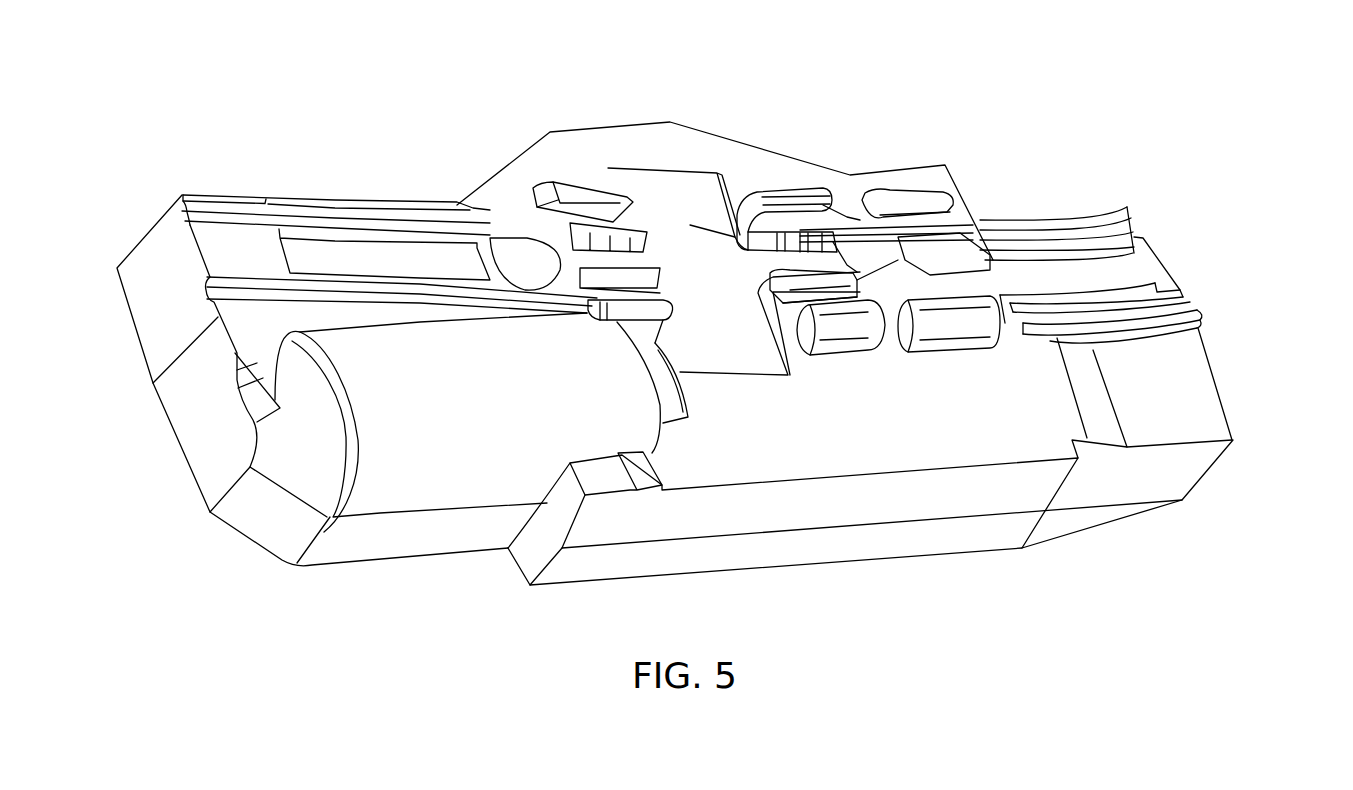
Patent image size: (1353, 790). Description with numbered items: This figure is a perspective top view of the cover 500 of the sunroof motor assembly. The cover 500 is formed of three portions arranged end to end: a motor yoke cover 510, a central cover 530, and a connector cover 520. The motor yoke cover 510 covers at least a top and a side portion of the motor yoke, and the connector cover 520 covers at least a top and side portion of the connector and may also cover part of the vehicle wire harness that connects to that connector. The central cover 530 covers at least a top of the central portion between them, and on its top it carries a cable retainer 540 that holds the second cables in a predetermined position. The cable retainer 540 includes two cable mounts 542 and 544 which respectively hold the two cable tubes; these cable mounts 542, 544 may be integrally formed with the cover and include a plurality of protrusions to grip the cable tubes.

The cover 500 is at (215, 103).
The motor yoke cover 510 is at (400, 475).
The connector cover 520 is at (1170, 373).
The central cover 530 is at (737, 448).
The cable retainer 540 is at (828, 132).
The cable mount 542 is at (790, 215).
The cable mount 544 is at (827, 353).